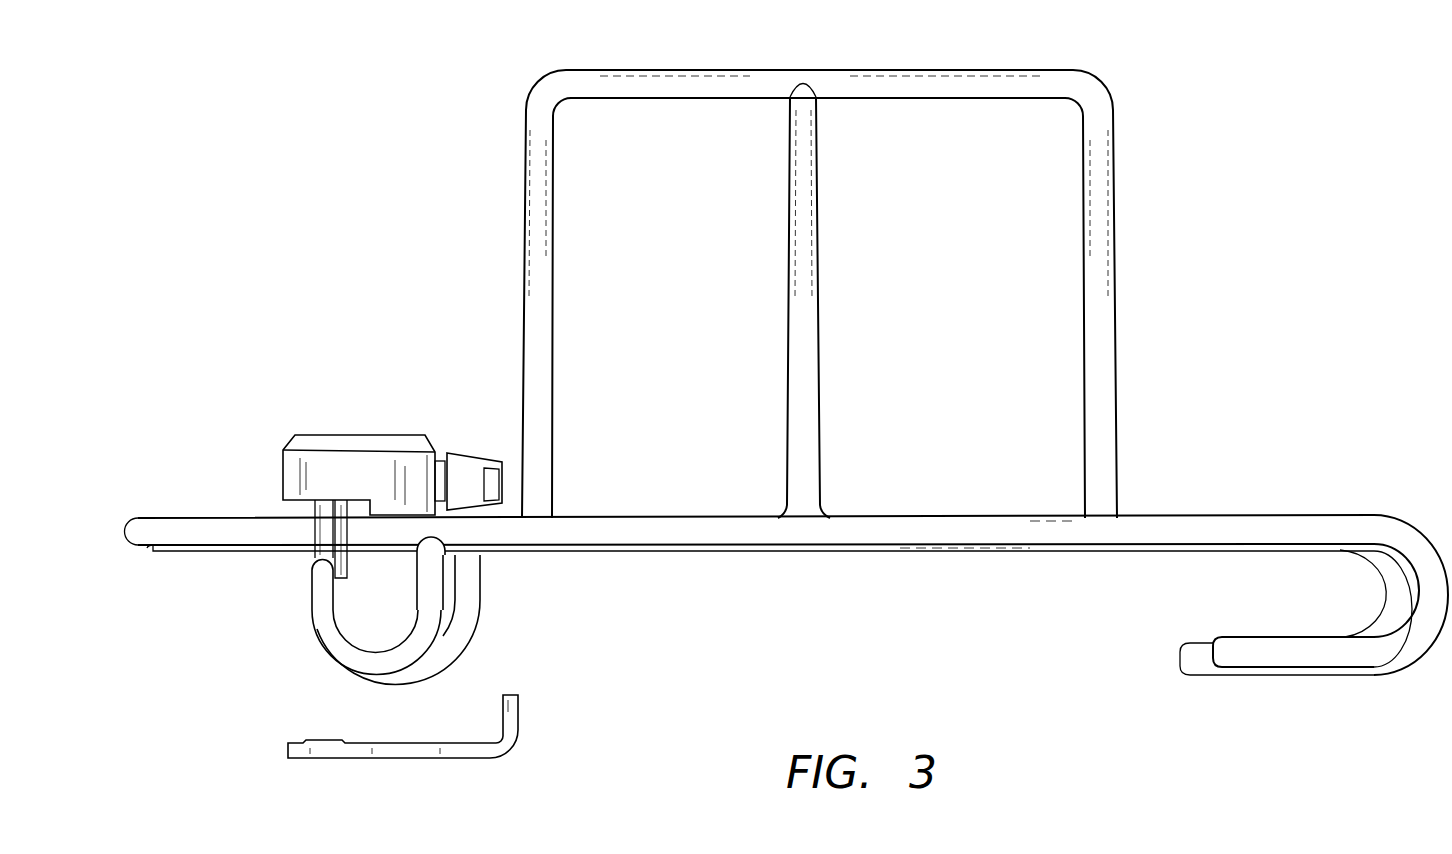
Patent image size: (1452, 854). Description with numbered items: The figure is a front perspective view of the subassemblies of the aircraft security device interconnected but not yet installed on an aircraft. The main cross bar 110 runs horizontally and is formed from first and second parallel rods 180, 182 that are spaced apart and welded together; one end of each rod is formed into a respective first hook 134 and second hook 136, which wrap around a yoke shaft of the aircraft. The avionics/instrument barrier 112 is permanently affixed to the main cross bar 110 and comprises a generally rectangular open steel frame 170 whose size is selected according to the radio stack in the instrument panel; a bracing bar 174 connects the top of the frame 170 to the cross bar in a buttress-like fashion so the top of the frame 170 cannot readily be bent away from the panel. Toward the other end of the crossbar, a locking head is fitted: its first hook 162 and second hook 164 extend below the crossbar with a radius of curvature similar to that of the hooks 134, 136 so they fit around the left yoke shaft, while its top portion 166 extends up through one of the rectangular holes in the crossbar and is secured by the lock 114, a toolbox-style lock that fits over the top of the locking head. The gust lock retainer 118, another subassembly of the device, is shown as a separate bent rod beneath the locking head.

The main cross bar 110 is at (865, 535).
The avionics/instrument barrier 112 is at (1112, 262).
The lock 114 is at (374, 433).
The gust lock retainer 118 is at (432, 752).
The first hook 134 is at (1275, 655).
The second hook 136 is at (1395, 605).
The first hook 162 is at (365, 665).
The second hook 164 is at (472, 613).
The top portion 166 is at (312, 513).
The frame 170 is at (703, 70).
The bracing bar 174 is at (818, 228).
The first parallel rod 180 is at (1050, 530).
The second parallel rod 182 is at (965, 548).